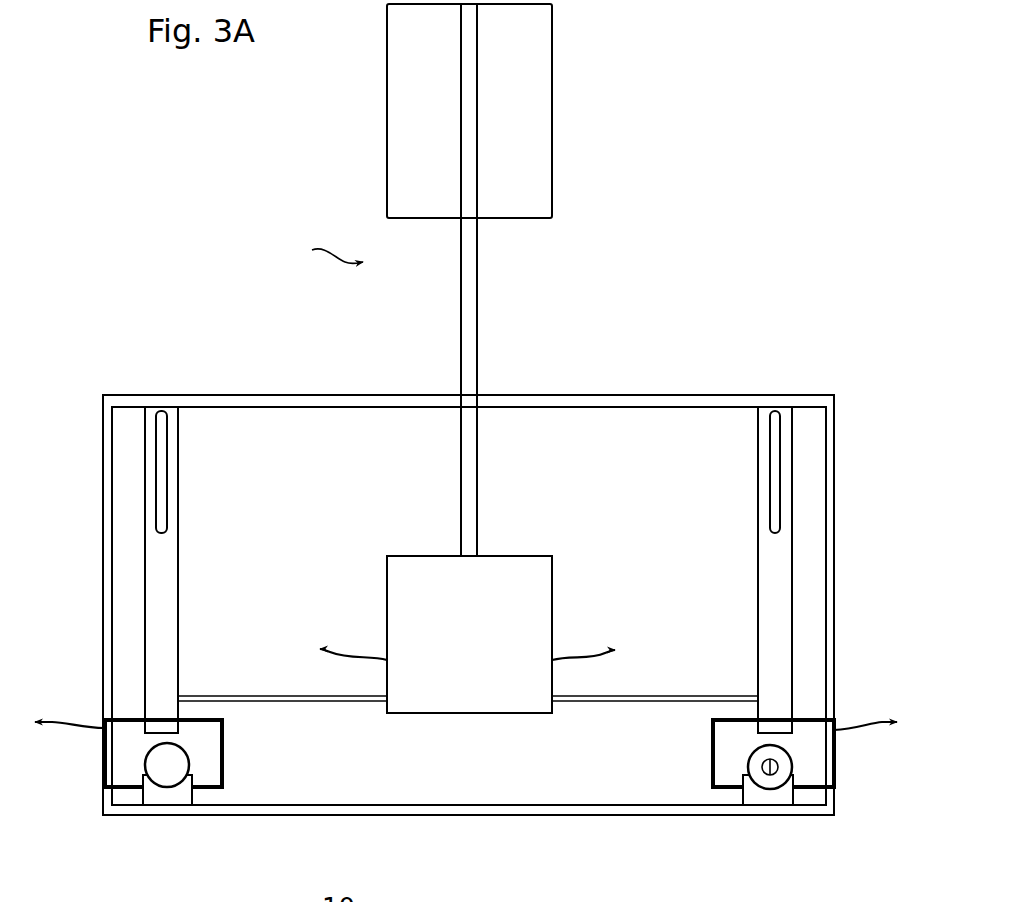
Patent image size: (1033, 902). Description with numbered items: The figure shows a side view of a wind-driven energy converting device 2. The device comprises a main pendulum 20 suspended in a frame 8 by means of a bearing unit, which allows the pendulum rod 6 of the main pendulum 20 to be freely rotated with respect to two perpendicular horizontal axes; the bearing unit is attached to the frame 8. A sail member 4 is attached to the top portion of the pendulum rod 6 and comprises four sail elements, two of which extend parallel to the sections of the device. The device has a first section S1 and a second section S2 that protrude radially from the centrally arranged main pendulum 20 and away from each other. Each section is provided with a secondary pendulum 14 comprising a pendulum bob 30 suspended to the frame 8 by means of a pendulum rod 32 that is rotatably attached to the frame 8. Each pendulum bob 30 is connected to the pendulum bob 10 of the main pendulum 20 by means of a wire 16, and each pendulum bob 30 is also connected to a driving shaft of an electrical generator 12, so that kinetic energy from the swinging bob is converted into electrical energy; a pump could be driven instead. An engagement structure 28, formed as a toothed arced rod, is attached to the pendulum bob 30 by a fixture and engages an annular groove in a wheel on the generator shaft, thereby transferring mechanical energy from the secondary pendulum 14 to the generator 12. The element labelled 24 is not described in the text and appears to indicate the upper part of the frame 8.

The wind-driven energy converting device 2 is at (120, 145).
The sail member 4 is at (596, 127).
The pendulum rod 6 is at (461, 278).
The frame 8 is at (616, 395).
The pendulum bob 10 is at (387, 617).
The electrical generator 12 is at (170, 800).
The secondary pendulum 14 is at (190, 562).
The wire 16 is at (318, 702).
The main pendulum 20 is at (318, 251).
The cover plate 24 is at (243, 395).
The engagement structure 28 is at (201, 788).
The pendulum bob 30 is at (179, 643).
The pendulum rod 32 is at (180, 470).
The first section S1 is at (140, 356).
The second section S2 is at (750, 366).